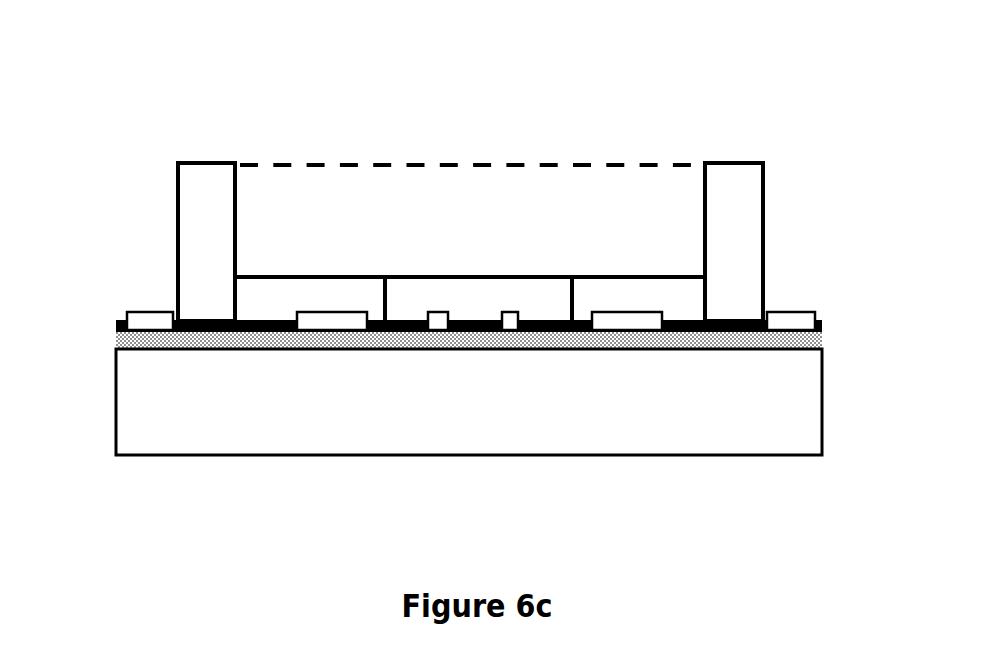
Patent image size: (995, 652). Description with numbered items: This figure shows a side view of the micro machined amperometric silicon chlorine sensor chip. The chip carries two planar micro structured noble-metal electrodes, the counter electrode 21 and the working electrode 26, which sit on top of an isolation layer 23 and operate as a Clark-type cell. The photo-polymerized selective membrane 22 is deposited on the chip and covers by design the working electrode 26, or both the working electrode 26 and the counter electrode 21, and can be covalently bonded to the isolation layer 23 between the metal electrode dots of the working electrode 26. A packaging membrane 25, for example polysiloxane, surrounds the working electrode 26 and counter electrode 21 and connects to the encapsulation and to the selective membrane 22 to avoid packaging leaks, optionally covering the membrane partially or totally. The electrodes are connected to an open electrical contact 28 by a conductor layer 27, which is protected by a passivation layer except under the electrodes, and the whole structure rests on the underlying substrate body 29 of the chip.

The counter electrode 21 is at (337, 317).
The selective membrane 22 is at (347, 285).
The isolation layer 23 is at (211, 319).
The packaging membrane 25 is at (620, 214).
The working electrode 26 is at (430, 306).
The conductor layer 27 is at (756, 329).
The electrical contact 28 is at (799, 306).
The substrate 29 is at (695, 417).